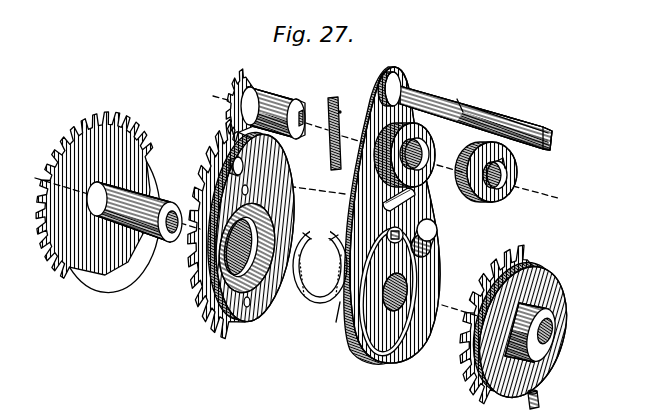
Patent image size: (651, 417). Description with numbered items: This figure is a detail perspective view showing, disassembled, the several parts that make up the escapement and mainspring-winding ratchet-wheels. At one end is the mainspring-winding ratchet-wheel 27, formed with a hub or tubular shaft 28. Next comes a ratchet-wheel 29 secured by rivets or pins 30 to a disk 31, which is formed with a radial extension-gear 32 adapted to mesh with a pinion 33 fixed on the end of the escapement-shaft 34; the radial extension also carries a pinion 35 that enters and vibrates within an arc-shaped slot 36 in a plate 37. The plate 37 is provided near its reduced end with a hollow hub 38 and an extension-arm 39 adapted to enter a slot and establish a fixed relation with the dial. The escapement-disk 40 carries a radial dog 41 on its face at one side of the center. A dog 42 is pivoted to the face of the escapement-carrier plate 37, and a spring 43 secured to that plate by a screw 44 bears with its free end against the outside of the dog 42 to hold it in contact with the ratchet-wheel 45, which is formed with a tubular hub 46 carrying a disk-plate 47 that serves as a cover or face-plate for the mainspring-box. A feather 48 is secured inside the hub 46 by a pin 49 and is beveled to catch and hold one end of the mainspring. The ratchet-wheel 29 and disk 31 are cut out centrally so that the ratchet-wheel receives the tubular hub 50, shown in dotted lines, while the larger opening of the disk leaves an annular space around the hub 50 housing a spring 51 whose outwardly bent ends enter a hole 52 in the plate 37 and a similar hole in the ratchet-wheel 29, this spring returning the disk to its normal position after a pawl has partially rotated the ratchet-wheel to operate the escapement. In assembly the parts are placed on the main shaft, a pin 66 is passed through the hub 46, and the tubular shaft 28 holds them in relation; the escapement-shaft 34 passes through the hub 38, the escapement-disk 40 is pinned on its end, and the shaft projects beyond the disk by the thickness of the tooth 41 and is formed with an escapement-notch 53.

The mainspring-winding ratchet-wheel 27 is at (78, 275).
The hub or tubular shaft 28 is at (150, 236).
The ratchet-wheel 29 is at (195, 310).
The rivets or pins 30 is at (248, 308).
The disk 31 is at (222, 322).
The radial extension-gear 32 is at (214, 229).
The pinion 33 is at (235, 99).
The escapement-shaft 34 is at (312, 97).
The pinion 35 is at (266, 150).
The arc-shaped slot 36 is at (410, 197).
The plate 37 is at (352, 350).
The hollow hub 38 is at (440, 140).
The extension-arm 39 is at (465, 111).
The escapement-disk 40 is at (506, 174).
The radial dog 41 is at (506, 190).
The dog 42 is at (434, 250).
The spring 43 is at (414, 338).
The screw 44 is at (383, 228).
The ratchet-wheel 45 is at (500, 282).
The tubular hub 46 is at (554, 348).
The disk-plate 47 is at (562, 285).
The feather 48 is at (556, 322).
The pin 49 is at (537, 312).
The tubular hub 50 is at (334, 323).
The spring 51 is at (303, 298).
The hole 52 is at (340, 112).
The escapement-notch 53 is at (298, 116).
The pin 66 is at (582, 415).